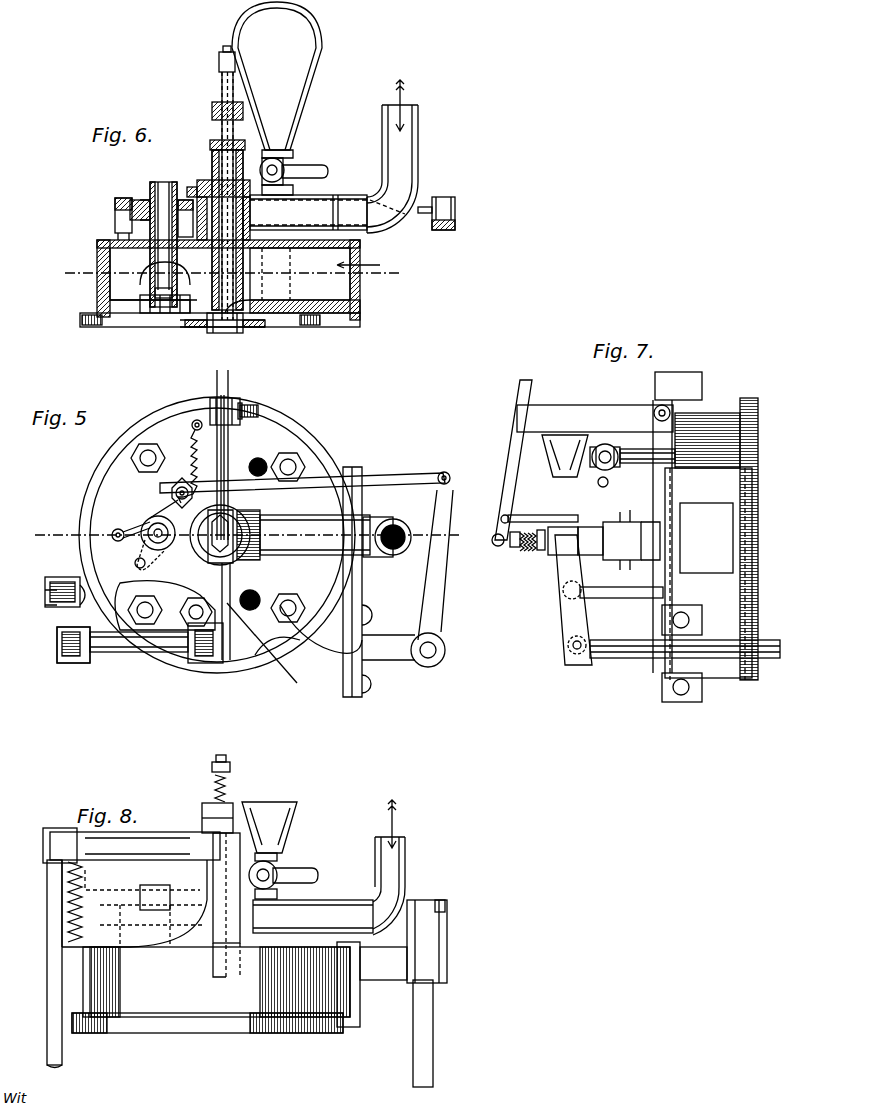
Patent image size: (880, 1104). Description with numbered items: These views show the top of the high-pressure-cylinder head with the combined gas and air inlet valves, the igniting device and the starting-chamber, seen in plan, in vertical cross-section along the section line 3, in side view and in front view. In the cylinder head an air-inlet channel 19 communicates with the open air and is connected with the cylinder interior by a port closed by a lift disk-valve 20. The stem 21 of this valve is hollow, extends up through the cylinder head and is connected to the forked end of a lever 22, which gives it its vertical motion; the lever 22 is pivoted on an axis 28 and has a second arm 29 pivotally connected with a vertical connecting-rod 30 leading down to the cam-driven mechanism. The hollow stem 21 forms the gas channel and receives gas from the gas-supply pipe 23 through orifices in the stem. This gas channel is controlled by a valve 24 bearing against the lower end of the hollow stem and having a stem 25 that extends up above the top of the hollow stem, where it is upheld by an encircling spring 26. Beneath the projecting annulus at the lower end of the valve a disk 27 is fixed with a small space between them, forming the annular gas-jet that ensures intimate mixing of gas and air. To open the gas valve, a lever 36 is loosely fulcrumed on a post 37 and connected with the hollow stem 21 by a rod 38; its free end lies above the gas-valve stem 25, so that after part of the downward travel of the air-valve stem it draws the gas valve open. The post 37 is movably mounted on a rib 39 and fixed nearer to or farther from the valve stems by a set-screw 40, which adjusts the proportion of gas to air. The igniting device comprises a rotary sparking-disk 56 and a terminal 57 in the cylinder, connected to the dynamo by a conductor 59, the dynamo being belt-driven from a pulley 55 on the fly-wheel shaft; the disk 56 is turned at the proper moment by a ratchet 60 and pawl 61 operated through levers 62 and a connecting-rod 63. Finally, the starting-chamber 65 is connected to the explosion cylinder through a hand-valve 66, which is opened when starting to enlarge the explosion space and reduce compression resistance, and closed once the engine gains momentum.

In FIG. 5, the section line 3 is at (251, 540).
In FIG. 6, the air-inlet channel 19 is at (232, 253).
In FIG. 8, the air-inlet channel 19 is at (259, 960).
In FIG. 6, the lift disk-valve 20 is at (263, 327).
In FIG. 6, the hollow valve-stem 21 is at (214, 158).
In FIG. 7, the hollow valve-stem 21 is at (595, 528).
In FIG. 5, the lever 22 is at (240, 578).
In FIG. 7, the lever 22 is at (573, 600).
In FIG. 8, the lever 22 is at (131, 845).
In FIG. 6, the gas-supply pipe 23 is at (411, 156).
In FIG. 8, the gas-supply pipe 23 is at (329, 867).
In FIG. 6, the gas valve 24 is at (228, 333).
In FIG. 6, the gas-valve stem 25 is at (222, 172).
In FIG. 5, the gas-valve stem 25 is at (324, 535).
In FIG. 7, the gas-valve stem 25 is at (512, 547).
In FIG. 8, the gas-valve stem 25 is at (212, 770).
In FIG. 6, the encircling spring 26 is at (219, 93).
In FIG. 7, the encircling spring 26 is at (527, 548).
In FIG. 8, the encircling spring 26 is at (215, 793).
In FIG. 6, the annulus or disk 27 is at (258, 328).
In FIG. 5, the axis 28 is at (60, 650).
In FIG. 7, the axis 28 is at (573, 648).
In FIG. 5, the second arm 29 is at (45, 600).
In FIG. 5, the vertical connecting-rod 30 is at (62, 583).
In FIG. 7, the vertical connecting-rod 30 is at (615, 592).
In FIG. 8, the vertical connecting-rod 30 is at (47, 968).
In FIG. 5, the lever 36 is at (260, 470).
In FIG. 7, the lever 36 is at (510, 470).
In FIG. 5, the post 37 is at (240, 420).
In FIG. 7, the rod 38 is at (550, 516).
In FIG. 5, the rib 39 is at (217, 378).
In FIG. 7, the rib 39 is at (677, 522).
In FIG. 5, the set-screw 40 is at (262, 398).
In FIG. 7, the set-screw 40 is at (676, 403).
In FIG. 8, the pulley 55 is at (134, 903).
In FIG. 6, the rotary sparking-disk 56 is at (166, 256).
In FIG. 7, the terminal 57 is at (595, 418).
In FIG. 7, the conductor 59 is at (710, 550).
In FIG. 6, the ratchet 60 is at (150, 196).
In FIG. 5, the ratchet 60 is at (168, 545).
In FIG. 6, the pawl 61 is at (132, 200).
In FIG. 5, the pawl 61 is at (140, 530).
In FIG. 5, the levers 62 is at (395, 480).
In FIG. 5, the connecting-rod 63 is at (428, 650).
In FIG. 6, the starting-chamber 65 is at (277, 80).
In FIG. 7, the starting-chamber 65 is at (565, 456).
In FIG. 8, the starting-chamber 65 is at (269, 827).
In FIG. 6, the hand-valve 66 is at (298, 172).
In FIG. 7, the hand-valve 66 is at (598, 483).
In FIG. 8, the hand-valve 66 is at (295, 876).